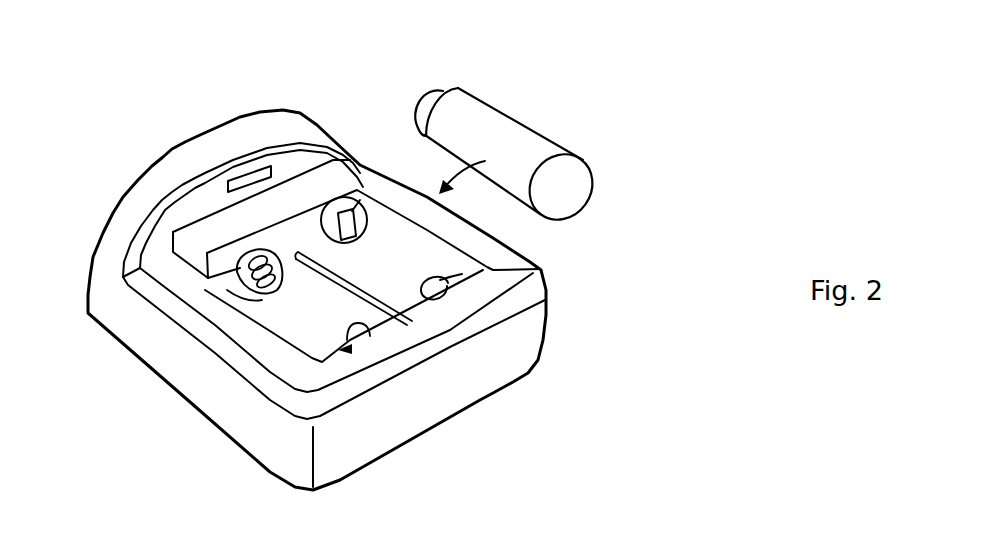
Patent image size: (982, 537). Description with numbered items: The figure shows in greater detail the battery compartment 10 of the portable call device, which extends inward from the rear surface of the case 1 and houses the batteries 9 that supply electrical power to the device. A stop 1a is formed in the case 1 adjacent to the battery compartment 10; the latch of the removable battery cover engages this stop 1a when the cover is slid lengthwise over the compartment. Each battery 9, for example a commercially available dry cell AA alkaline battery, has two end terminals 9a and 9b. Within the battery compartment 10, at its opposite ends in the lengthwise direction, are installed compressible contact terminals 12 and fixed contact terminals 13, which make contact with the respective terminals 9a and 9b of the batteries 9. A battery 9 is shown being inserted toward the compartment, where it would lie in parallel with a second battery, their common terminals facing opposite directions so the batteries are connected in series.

The case 1 is at (218, 430).
The stop 1a is at (245, 180).
The battery 9 is at (527, 141).
The terminal of battery 9a is at (573, 188).
The terminal of battery 9b is at (432, 90).
The battery compartment 10 is at (382, 287).
The compressible contact terminal 12 is at (265, 262).
The fixed contact terminal 13 is at (360, 198).